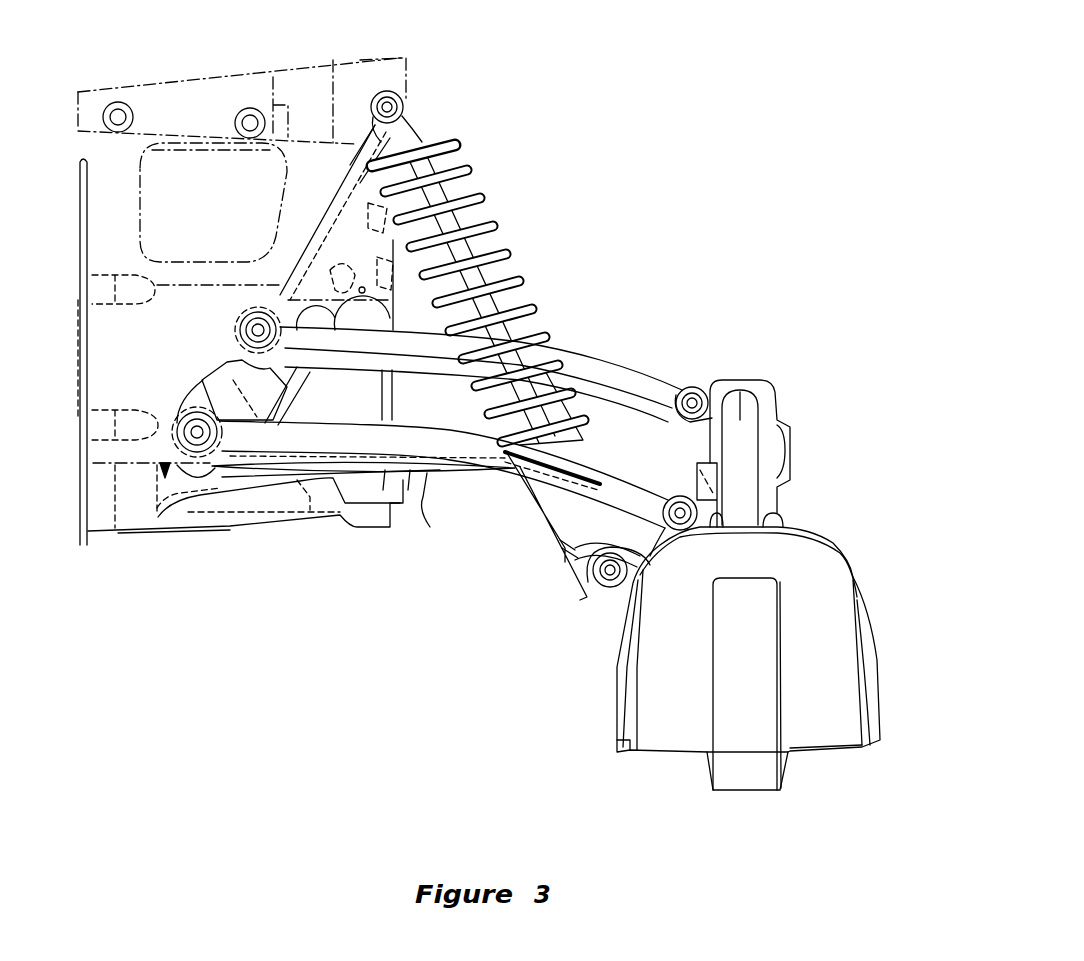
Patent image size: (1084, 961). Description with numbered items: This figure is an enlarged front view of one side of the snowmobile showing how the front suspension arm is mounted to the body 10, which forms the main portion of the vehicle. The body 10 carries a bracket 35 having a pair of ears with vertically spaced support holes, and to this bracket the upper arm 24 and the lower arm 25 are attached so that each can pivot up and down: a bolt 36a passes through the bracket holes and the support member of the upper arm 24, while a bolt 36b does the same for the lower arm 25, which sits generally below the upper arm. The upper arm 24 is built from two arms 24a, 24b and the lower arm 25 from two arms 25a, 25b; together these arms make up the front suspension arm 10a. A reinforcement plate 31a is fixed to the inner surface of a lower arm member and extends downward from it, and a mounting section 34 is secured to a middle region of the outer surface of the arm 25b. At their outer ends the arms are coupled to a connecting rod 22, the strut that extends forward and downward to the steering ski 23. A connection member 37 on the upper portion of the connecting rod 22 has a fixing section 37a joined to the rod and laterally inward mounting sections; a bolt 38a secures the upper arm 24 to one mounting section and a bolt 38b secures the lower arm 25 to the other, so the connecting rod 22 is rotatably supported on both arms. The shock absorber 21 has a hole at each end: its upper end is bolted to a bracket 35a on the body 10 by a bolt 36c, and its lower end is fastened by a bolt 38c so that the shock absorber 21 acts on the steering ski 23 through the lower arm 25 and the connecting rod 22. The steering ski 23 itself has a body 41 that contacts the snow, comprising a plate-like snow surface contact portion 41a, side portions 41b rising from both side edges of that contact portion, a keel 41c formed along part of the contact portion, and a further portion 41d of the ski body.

The body 10 is at (169, 70).
The lower arm mounting portion of body frame 10a is at (453, 582).
The shock absorber 21 is at (520, 311).
The connecting rod 22 is at (770, 507).
The steering ski 23 is at (754, 680).
The upper arm 24 is at (481, 353).
The arm 24a is at (545, 357).
The arm 24b is at (648, 398).
The lower arm 25 is at (440, 510).
The arm 25a is at (516, 472).
The arm 25b is at (542, 532).
The reinforcement plate 31a is at (583, 548).
The mounting section 34 is at (428, 492).
The bracket 35 is at (95, 356).
The bracket 35a is at (363, 68).
The bolt 36a is at (240, 331).
The bolt 36b is at (192, 415).
The bolt 36c is at (403, 107).
The connection member 37 is at (775, 453).
The fixing section 37a is at (781, 442).
The bolt 38a is at (691, 390).
The bolt 38b is at (681, 498).
The bolt 38c is at (606, 592).
The body 41 is at (754, 680).
The snow surface contact portion 41a is at (826, 747).
The side portions 41b is at (880, 704).
The keel 41c is at (746, 790).
The tire shoulder 41d is at (617, 726).